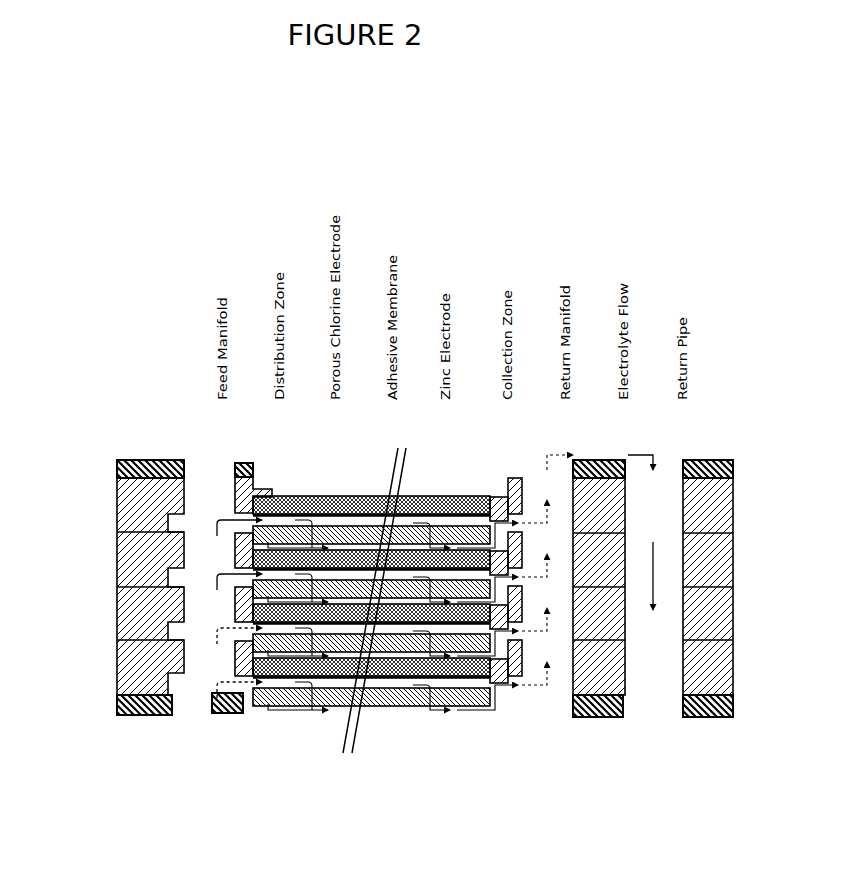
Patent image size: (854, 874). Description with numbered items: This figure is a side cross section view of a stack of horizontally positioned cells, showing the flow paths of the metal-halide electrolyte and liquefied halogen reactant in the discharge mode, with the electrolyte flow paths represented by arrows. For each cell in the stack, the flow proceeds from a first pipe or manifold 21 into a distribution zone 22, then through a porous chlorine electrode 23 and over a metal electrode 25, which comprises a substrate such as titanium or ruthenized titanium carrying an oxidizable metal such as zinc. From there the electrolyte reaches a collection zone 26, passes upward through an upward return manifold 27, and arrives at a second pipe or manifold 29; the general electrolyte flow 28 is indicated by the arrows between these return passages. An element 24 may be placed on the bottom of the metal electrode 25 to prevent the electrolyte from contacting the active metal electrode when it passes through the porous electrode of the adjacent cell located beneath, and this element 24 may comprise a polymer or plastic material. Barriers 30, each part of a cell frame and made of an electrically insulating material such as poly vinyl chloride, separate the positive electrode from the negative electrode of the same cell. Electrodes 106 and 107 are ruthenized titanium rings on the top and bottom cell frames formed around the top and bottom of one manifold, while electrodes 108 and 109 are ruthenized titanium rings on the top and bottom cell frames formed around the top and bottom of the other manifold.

The first pipe or manifold 21 is at (211, 487).
The distribution zone 22 is at (253, 470).
The porous chlorine electrode 23 is at (318, 496).
The element 24 is at (372, 496).
The metal electrode 25 is at (434, 496).
The collection zone 26 is at (500, 518).
The upward return manifold 27 is at (530, 482).
The electrolyte flow 28 is at (639, 453).
The second pipe or manifold 29 is at (665, 482).
The barrier 30 is at (510, 642).
The electrode 106 is at (117, 470).
The electrode 107 is at (117, 700).
The electrode 108 is at (733, 468).
The electrode 109 is at (733, 712).